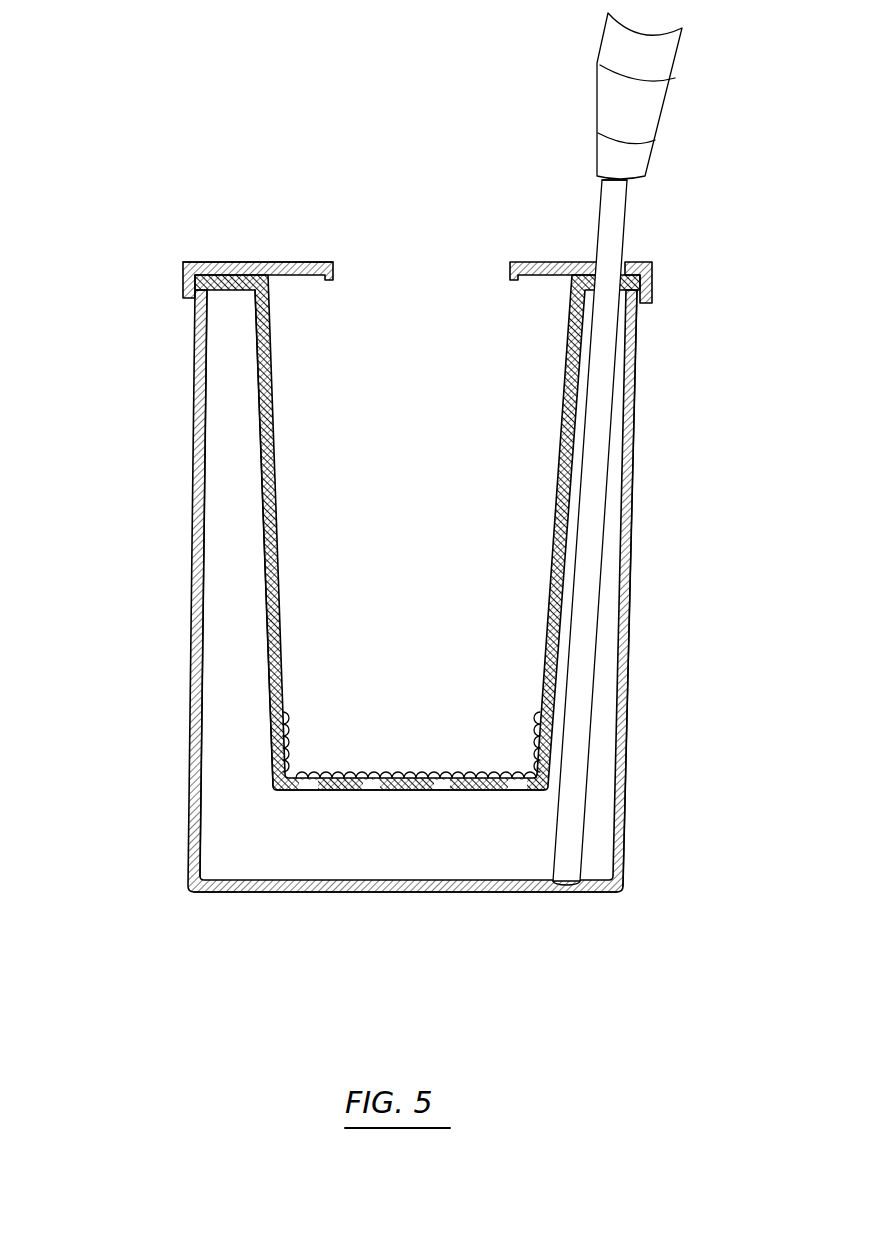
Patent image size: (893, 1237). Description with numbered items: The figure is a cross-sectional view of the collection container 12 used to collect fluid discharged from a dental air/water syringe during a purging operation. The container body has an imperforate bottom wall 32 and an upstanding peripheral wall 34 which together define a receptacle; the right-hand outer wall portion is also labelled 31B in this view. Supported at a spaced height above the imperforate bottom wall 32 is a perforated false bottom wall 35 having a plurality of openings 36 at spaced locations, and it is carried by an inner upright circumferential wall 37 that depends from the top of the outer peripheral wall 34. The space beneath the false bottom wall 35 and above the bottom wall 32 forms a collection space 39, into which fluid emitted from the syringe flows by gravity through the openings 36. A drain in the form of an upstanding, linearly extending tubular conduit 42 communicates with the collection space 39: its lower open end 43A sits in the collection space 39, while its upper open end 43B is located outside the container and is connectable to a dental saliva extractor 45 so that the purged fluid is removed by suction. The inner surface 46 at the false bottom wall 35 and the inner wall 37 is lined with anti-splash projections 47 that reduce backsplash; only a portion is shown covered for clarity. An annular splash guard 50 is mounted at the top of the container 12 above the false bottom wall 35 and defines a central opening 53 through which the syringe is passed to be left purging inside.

The collection container 12 is at (229, 258).
The annular splash guard 50 is at (287, 262).
The central opening 53 is at (434, 258).
The dental saliva extractor 45 is at (596, 158).
The upper open end 43B is at (628, 190).
The tubular conduit 42 is at (607, 522).
The inner surface 46 is at (276, 560).
The anti-splash projections 47 is at (305, 712).
The inner upright circumferential wall 37 is at (265, 695).
The upstanding peripheral wall 34 is at (190, 795).
The collection space 39 is at (222, 838).
The imperforate bottom wall 32 is at (236, 892).
The openings 36 is at (372, 790).
The perforated false bottom wall 35 is at (410, 790).
The lower open end 43A is at (570, 885).
The outer cup 31B is at (620, 892).